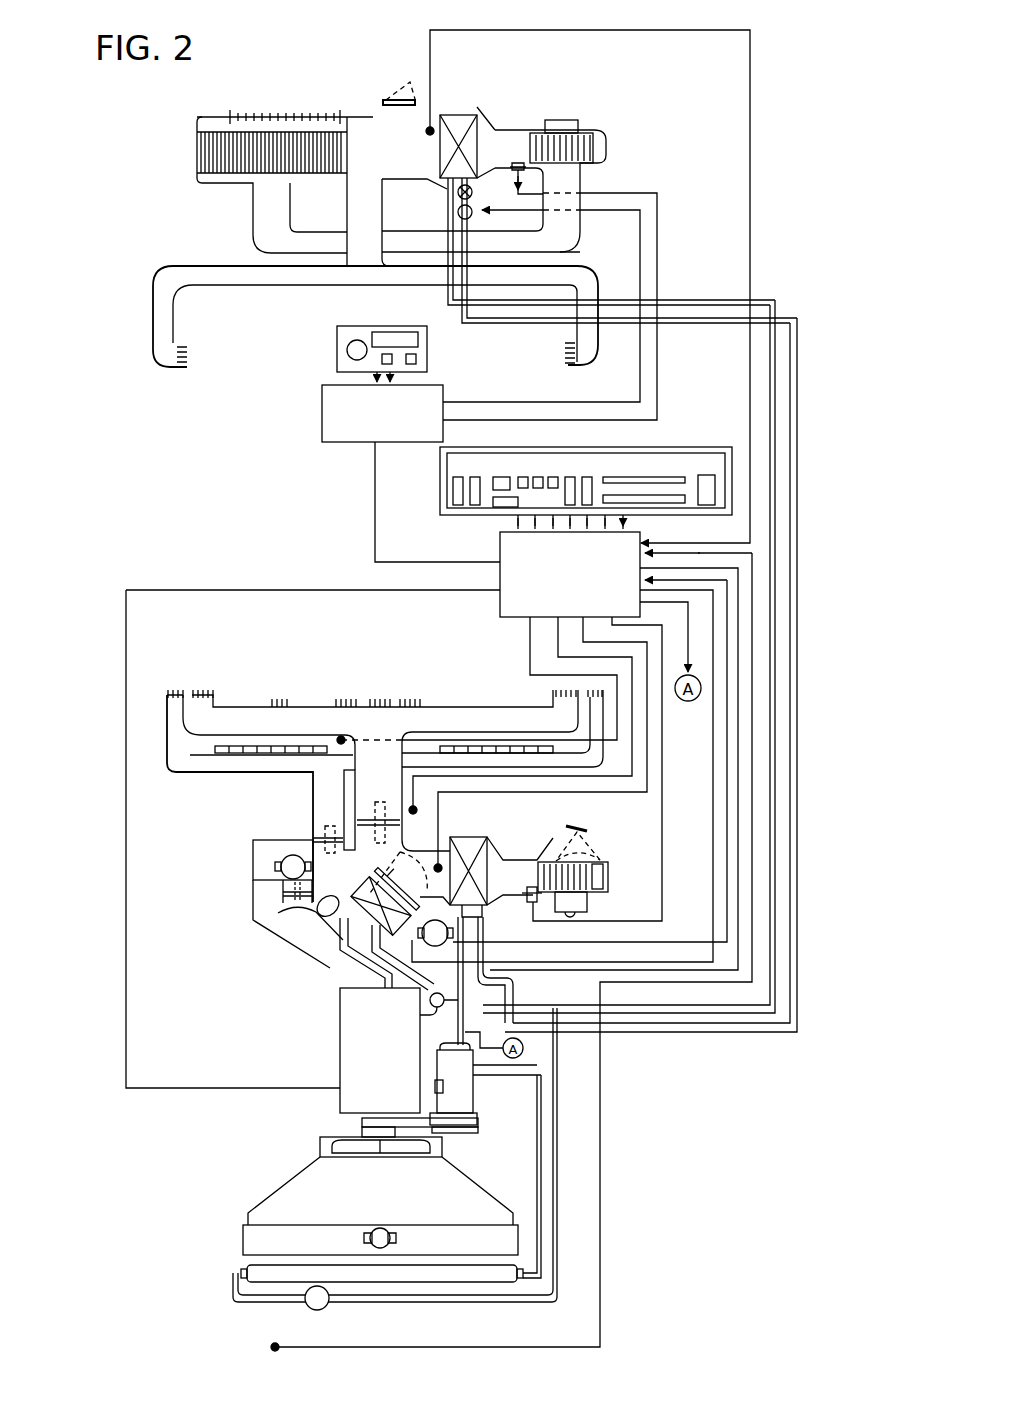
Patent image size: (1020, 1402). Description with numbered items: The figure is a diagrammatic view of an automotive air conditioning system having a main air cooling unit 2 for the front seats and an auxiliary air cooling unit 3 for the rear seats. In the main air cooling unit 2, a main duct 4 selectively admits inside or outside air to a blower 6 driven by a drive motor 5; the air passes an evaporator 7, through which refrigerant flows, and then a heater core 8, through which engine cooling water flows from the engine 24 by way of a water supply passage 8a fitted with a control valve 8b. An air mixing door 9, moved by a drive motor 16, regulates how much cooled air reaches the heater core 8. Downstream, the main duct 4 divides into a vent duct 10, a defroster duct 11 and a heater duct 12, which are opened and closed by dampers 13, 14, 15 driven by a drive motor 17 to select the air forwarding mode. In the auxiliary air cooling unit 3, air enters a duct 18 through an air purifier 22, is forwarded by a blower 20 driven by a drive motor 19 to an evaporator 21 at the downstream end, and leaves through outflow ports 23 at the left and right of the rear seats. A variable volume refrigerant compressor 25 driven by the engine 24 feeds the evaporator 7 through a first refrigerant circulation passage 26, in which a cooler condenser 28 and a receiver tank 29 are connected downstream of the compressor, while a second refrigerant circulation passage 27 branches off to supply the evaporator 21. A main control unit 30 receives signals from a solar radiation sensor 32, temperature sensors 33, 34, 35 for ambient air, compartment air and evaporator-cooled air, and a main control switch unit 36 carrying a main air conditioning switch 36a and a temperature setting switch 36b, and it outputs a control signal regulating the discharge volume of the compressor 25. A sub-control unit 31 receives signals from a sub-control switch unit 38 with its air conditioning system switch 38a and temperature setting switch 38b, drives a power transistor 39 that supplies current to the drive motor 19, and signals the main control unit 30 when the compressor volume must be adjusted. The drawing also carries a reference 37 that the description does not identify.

The main air cooling unit 2 is at (182, 890).
The auxiliary air cooling unit 3 is at (184, 171).
The main duct 4 is at (600, 858).
The drive motor 5 is at (592, 902).
The blower 6 is at (598, 880).
The evaporator 7 is at (490, 862).
The heater core 8 is at (345, 920).
The water supply passage 8a is at (400, 995).
The control valve 8b is at (420, 1005).
The air mixing door 9 is at (405, 885).
The vent duct 10 is at (238, 717).
The defroster duct 11 is at (278, 760).
The heater duct 12 is at (256, 922).
The damper 13 is at (320, 836).
The damper 14 is at (365, 820).
The damper 15 is at (282, 892).
The drive motor 16 is at (455, 936).
The drive motor 17 is at (283, 862).
The duct 18 is at (583, 183).
The drive motor 19 is at (560, 119).
The blower 20 is at (590, 148).
The evaporator 21 is at (455, 113).
The air purifier 22 is at (264, 135).
The outflow ports 23 is at (192, 358).
The engine 24 is at (340, 1043).
The refrigerant compressor 25 is at (470, 1100).
The first refrigerant circulation passage 26 is at (562, 1197).
The second refrigerant circulation passage 27 is at (740, 294).
The cooler condenser 28 is at (460, 1283).
The receiver tank 29 is at (328, 1306).
The main control unit 30 is at (499, 546).
The sub-control unit 31 is at (337, 444).
The solar radiation sensor 32 is at (345, 738).
The ambient air temperature sensor 33 is at (271, 1347).
The room temperature sensor 34 is at (411, 807).
The cooled air temperature sensor 35 is at (437, 862).
The main control switch unit 36 is at (727, 447).
The main air conditioning switch 36a is at (708, 477).
The temperature setting switch 36b is at (552, 477).
The sensor 37 is at (426, 133).
The sub-control switch unit 38 is at (337, 340).
The air conditioning system switch 38a is at (346, 351).
The temperature setting switch 38b is at (410, 354).
The power transistor 39 is at (456, 212).